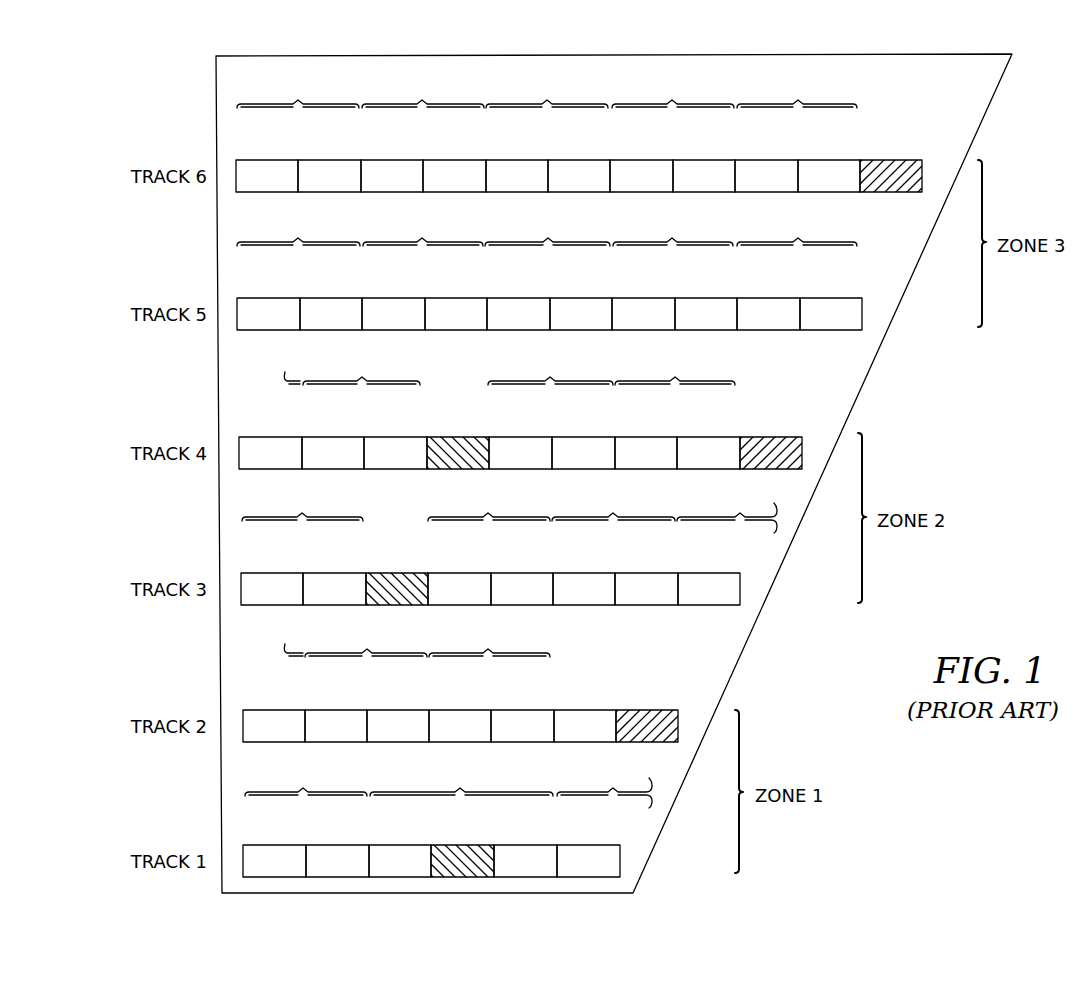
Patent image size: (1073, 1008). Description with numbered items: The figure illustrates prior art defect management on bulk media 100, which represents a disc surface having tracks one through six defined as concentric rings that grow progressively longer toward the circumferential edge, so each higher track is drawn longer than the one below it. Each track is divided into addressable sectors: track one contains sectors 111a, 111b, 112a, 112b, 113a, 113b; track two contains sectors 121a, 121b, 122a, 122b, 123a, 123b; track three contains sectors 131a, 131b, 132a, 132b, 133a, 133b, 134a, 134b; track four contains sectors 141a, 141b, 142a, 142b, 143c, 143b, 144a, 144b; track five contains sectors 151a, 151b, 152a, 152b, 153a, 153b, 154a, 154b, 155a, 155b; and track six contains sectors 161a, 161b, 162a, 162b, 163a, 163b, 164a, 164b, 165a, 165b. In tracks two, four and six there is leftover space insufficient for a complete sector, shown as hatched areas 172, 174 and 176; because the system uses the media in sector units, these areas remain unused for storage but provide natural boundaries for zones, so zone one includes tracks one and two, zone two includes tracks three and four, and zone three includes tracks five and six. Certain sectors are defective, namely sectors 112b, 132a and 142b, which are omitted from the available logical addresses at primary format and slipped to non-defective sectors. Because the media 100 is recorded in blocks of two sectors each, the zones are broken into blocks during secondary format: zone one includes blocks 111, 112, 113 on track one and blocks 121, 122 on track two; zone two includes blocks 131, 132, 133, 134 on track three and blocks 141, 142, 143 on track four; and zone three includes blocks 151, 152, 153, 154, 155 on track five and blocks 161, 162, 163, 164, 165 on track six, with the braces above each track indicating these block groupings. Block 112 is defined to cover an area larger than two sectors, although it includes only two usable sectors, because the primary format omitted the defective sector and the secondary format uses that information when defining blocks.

The bulk media 100 is at (216, 84).
The block 161 is at (298, 91).
The block 162 is at (423, 91).
The block 163 is at (547, 91).
The block 164 is at (673, 91).
The block 165 is at (797, 91).
The sector 161a is at (267, 167).
The sector 161b is at (329, 167).
The sector 162a is at (391, 167).
The sector 162b is at (454, 167).
The sector 163a is at (517, 167).
The sector 163b is at (579, 167).
The sector 164a is at (641, 167).
The sector 164b is at (708, 167).
The sector 165a is at (767, 167).
The sector 165b is at (855, 167).
The area 176 is at (912, 158).
The block 151 is at (298, 229).
The block 152 is at (423, 229).
The block 153 is at (547, 229).
The block 154 is at (673, 229).
The block 155 is at (797, 229).
The sector 151a is at (267, 305).
The sector 151b is at (329, 305).
The sector 152a is at (392, 305).
The sector 152b is at (454, 305).
The sector 153a is at (514, 305).
The sector 153b is at (577, 305).
The sector 154a is at (641, 305).
The sector 154b is at (708, 305).
The sector 155a is at (806, 305).
The sector 155b is at (855, 305).
The block 141 is at (361, 368).
The block 142 is at (550, 368).
The block 143 is at (675, 368).
The sector 141a is at (270, 444).
The sector 141b is at (331, 444).
The sector 142a is at (394, 444).
The sector 142b is at (456, 444).
The sector 143c is at (515, 444).
The sector 143b is at (577, 444).
The sector 144a is at (642, 444).
The sector 144b is at (732, 444).
The area 174 is at (792, 442).
The block 134 is at (262, 366).
The block 131 is at (302, 504).
The block 132 is at (489, 504).
The block 133 is at (613, 504).
The sector 131a is at (271, 580).
The sector 131b is at (334, 580).
The sector 132a is at (404, 580).
The sector 132b is at (462, 580).
The sector 133a is at (521, 580).
The sector 133b is at (584, 580).
The sector 134a is at (646, 580).
The sector 134b is at (734, 580).
The block 113 is at (264, 641).
The block 121 is at (366, 640).
The block 122 is at (489, 640).
The sector 121a is at (274, 717).
The sector 121b is at (335, 717).
The sector 122a is at (399, 717).
The sector 122b is at (458, 717).
The sector 123a is at (523, 717).
The sector 123b is at (612, 717).
The area 172 is at (668, 711).
The block 111 is at (306, 779).
The block 112 is at (461, 779).
The sector 111a is at (275, 852).
The sector 111b is at (336, 852).
The sector 112a is at (399, 852).
The sector 112b is at (457, 852).
The sector 113a is at (524, 852).
The sector 113b is at (612, 852).